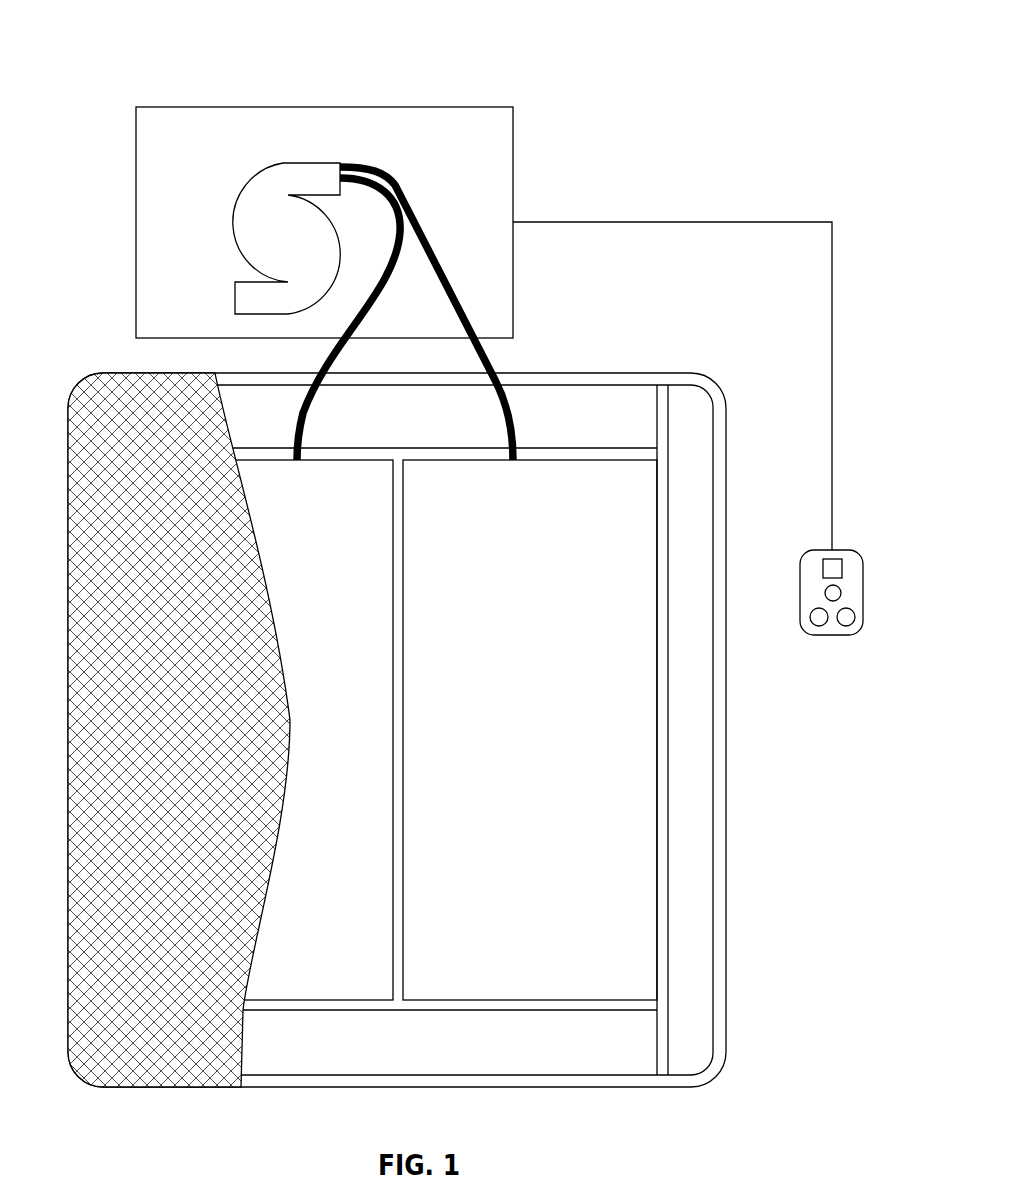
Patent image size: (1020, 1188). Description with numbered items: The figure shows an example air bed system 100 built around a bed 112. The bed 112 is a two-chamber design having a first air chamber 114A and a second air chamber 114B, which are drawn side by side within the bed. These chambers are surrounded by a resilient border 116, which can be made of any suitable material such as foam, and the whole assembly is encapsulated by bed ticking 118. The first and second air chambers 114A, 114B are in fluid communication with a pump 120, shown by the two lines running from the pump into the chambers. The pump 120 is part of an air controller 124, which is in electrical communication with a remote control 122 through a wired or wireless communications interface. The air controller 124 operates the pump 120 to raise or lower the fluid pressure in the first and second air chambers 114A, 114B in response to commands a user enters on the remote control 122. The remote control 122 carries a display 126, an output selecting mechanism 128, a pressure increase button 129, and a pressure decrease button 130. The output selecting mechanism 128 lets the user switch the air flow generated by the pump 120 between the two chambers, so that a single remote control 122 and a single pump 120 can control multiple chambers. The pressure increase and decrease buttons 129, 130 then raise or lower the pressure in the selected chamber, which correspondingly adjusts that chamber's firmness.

The air bed system 100 is at (132, 57).
The bed 112 is at (76, 351).
The first air chamber 114A is at (381, 993).
The second air chamber 114B is at (645, 993).
The resilient border 116 is at (695, 832).
The bed ticking 118 is at (133, 497).
The pump 120 is at (232, 212).
The remote control 122 is at (852, 549).
The air controller 124 is at (513, 107).
The display 126 is at (842, 568).
The output selecting mechanism 128 is at (841, 593).
The pressure increase button 129 is at (815, 626).
The pressure decrease button 130 is at (853, 620).